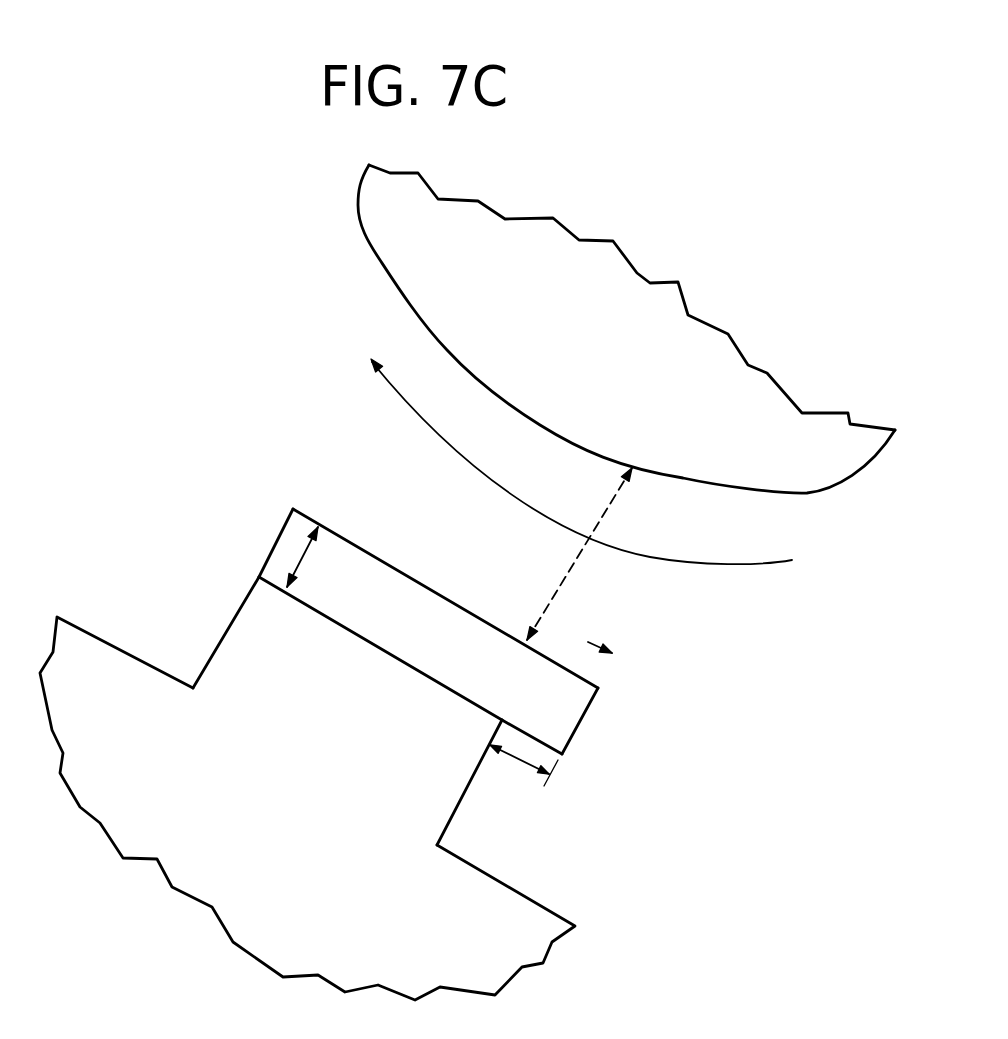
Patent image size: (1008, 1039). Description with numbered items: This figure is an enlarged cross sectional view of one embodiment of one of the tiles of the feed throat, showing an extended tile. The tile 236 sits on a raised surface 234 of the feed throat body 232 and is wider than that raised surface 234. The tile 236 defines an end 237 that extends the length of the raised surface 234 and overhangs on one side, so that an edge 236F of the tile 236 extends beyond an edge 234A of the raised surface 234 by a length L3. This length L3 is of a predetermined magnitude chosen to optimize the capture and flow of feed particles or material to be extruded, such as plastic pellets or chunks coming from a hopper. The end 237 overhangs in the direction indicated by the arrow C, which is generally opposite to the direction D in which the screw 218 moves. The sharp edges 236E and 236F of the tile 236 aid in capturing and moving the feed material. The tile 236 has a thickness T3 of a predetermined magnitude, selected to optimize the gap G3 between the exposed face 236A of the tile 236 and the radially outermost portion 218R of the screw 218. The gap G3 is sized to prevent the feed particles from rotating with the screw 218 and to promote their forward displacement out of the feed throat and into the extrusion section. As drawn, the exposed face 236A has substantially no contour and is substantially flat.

The screw 218 is at (407, 244).
The radially outermost portion of the screw 218R is at (412, 310).
The casing 232 is at (97, 638).
The raised surface 234 is at (376, 715).
The edge of the raised surface 234A is at (465, 797).
The tile 236 is at (476, 612).
The exposed face of the tile 236A is at (367, 552).
The edge of the tile 236E is at (295, 508).
The edge of the tile 236F is at (598, 688).
The end of the tile 237 is at (613, 696).
The thickness of the tile T3 is at (301, 557).
The gap G3 is at (570, 568).
The length L3 is at (518, 760).
The arrow C is at (558, 623).
The direction of the screw D is at (757, 563).